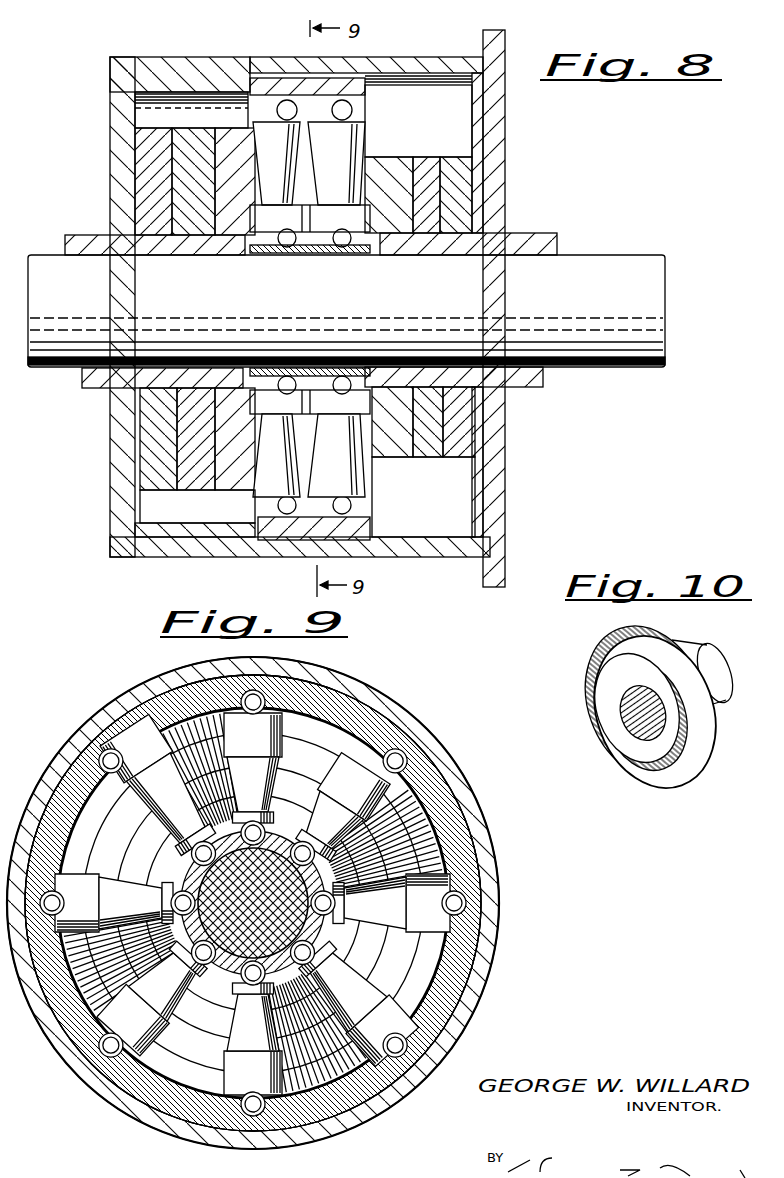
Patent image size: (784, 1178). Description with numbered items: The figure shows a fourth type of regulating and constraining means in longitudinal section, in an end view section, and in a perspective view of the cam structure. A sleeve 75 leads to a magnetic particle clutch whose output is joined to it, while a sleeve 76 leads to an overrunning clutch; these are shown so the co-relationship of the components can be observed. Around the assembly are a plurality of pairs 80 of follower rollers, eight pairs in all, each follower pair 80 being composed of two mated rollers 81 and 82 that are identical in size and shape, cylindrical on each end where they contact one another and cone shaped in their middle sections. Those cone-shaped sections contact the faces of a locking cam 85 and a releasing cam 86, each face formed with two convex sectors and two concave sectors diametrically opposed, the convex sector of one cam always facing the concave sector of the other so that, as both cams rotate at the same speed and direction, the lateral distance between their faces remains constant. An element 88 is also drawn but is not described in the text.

In FIG. 8, the sleeve 75 is at (100, 243).
In FIG. 8, the sleeve 76 is at (556, 246).
In FIG. 8, the pair of follower rollers 80 is at (310, 480).
In FIG. 9, the pair of follower rollers 80 is at (278, 903).
In FIG. 8, the follower roller 81 is at (318, 512).
In FIG. 8, the follower roller 82 is at (290, 455).
In FIG. 8, the locking cam 85 is at (400, 451).
In FIG. 10, the locking cam 85 is at (668, 657).
In FIG. 9, the releasing cam 86 is at (256, 891).
In FIG. 8, the spacer ring 88 is at (235, 477).